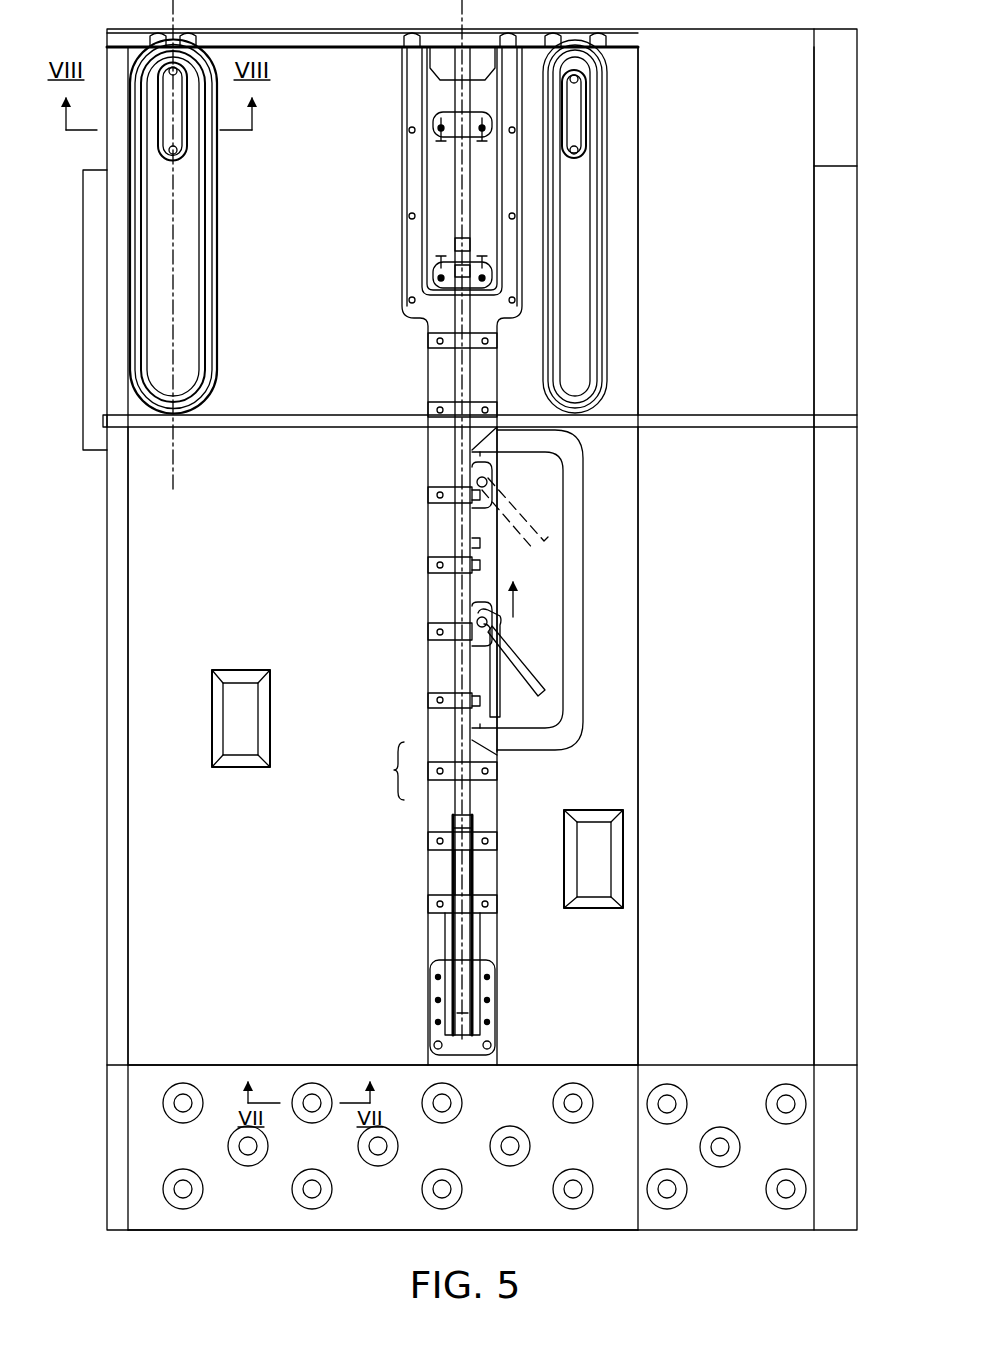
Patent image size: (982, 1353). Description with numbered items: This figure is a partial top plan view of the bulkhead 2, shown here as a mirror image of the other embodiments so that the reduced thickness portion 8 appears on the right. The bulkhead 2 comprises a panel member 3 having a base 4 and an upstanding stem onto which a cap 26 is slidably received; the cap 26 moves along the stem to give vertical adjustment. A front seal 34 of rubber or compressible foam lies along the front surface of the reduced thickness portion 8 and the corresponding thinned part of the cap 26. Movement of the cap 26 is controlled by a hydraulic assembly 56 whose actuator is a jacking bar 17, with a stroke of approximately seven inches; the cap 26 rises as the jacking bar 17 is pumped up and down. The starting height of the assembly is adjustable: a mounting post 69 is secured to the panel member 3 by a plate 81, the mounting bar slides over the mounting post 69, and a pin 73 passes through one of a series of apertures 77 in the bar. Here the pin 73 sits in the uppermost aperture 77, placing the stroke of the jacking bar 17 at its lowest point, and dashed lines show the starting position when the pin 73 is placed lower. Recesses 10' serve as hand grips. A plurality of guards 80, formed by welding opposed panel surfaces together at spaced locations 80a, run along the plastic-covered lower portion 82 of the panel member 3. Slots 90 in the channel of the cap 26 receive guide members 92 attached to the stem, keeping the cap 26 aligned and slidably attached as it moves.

The bulkhead 2 is at (97, 740).
The panel member 3 is at (802, 955).
The base 4 is at (249, 601).
The reduced thickness portion 8 is at (800, 683).
The recesses 10' is at (397, 821).
The jacking bar 17 is at (545, 672).
The cap 26 is at (682, 282).
The front seal 34 is at (709, 620).
The hydraulic assembly 56 is at (418, 597).
The mounting post 69 is at (465, 1013).
The pin 73 is at (470, 835).
The apertures 77 is at (465, 872).
The guards 80 is at (138, 1100).
The spaced locations 80a is at (183, 1085).
The plate 81 is at (440, 1010).
The lower portion 82 is at (386, 1212).
The slots 90 is at (176, 207).
The guide members 92 is at (183, 133).